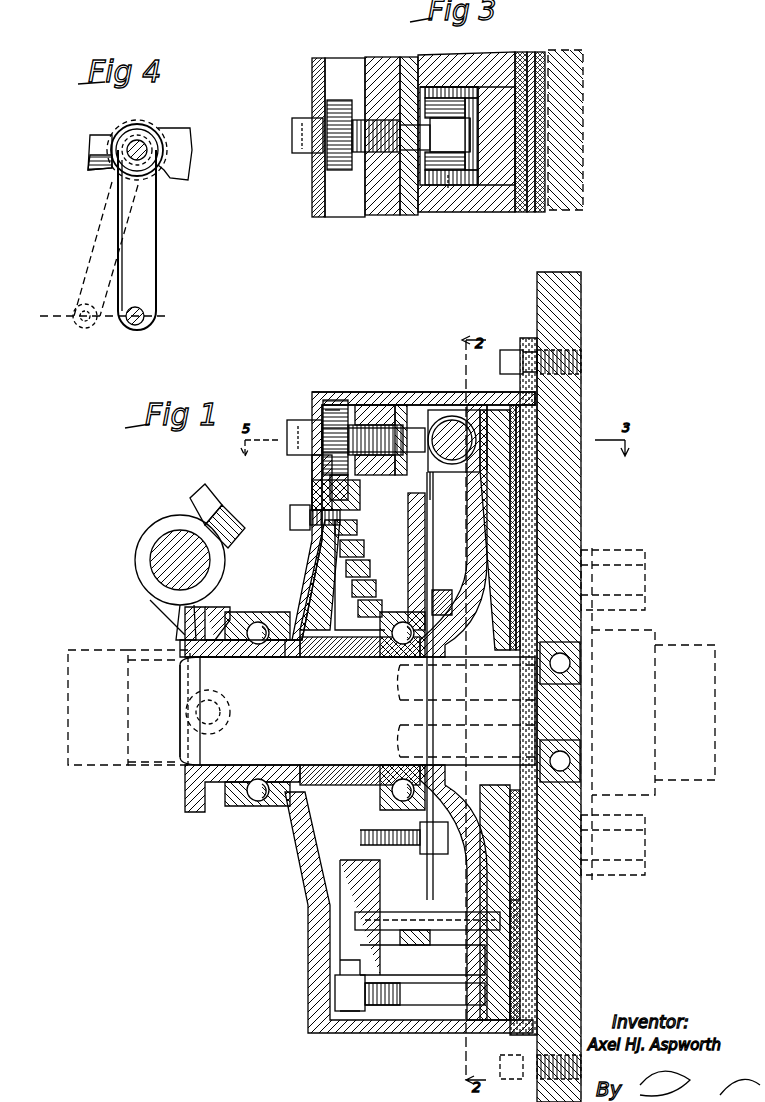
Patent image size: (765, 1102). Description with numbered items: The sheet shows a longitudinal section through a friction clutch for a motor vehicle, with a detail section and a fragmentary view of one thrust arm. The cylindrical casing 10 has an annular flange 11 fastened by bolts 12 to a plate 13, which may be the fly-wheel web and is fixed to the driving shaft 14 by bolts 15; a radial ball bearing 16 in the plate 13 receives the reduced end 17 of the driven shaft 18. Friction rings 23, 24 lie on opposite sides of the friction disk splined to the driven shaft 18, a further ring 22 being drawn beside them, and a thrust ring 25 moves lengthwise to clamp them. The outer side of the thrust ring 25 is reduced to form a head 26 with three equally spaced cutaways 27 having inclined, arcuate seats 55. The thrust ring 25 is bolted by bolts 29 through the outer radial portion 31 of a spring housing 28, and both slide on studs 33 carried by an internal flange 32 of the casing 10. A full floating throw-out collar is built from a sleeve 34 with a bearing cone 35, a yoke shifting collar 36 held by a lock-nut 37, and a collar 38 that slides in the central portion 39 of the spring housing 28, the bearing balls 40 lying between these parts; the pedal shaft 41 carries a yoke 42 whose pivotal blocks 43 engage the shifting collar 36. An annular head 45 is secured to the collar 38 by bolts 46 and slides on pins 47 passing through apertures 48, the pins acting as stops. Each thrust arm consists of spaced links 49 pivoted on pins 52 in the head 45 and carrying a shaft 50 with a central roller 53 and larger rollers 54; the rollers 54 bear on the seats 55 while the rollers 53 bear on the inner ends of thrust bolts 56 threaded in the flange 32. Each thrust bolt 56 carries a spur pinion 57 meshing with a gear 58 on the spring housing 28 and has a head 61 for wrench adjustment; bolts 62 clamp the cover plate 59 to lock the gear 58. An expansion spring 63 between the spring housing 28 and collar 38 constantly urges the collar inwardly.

In FIG. 1, the casing 10 is at (335, 408).
In FIG. 1, the annular flange 11 is at (527, 340).
In FIG. 1, the bolts 12 is at (581, 362).
In FIG. 3, the plate 13 is at (583, 200).
In FIG. 1, the plate 13 is at (581, 298).
In FIG. 1, the driving shaft 14 is at (700, 645).
In FIG. 1, the bolts 15 is at (645, 570).
In FIG. 1, the radial ball bearing 16 is at (570, 665).
In FIG. 1, the reduced end 17 is at (580, 715).
In FIG. 1, the driven shaft 18 is at (102, 748).
In FIG. 3, the ring 22 is at (521, 52).
In FIG. 1, the ring 22 is at (520, 470).
In FIG. 3, the friction ring 23 is at (531, 165).
In FIG. 1, the friction ring 23 is at (513, 445).
In FIG. 3, the friction ring 24 is at (540, 180).
In FIG. 1, the friction ring 24 is at (518, 462).
In FIG. 3, the thrust ring 25 is at (500, 200).
In FIG. 1, the thrust ring 25 is at (500, 430).
In FIG. 3, the annular extension or head 26 is at (430, 212).
In FIG. 3, the cutaways or slots 27 is at (476, 87).
In FIG. 1, the cutaways or slots 27 is at (467, 480).
In FIG. 1, the spring housing 28 is at (325, 540).
In FIG. 1, the bolts 29 is at (600, 795).
In FIG. 3, the outer radial portion 31 is at (410, 57).
In FIG. 1, the outer radial portion 31 is at (401, 405).
In FIG. 3, the internal flange 32 is at (375, 57).
In FIG. 1, the internal flange 32 is at (378, 405).
In FIG. 1, the studs 33 is at (410, 985).
In FIG. 1, the sleeve 34 is at (300, 652).
In FIG. 1, the cone 35 is at (400, 655).
In FIG. 1, the yoke shifting collar 36 is at (185, 622).
In FIG. 1, the lock-nut 37 is at (185, 790).
In FIG. 1, the collar 38 is at (350, 657).
In FIG. 1, the central portion 39 is at (335, 500).
In FIG. 1, the ball bearing 40 is at (200, 637).
In FIG. 1, the pedal shaft 41 is at (180, 548).
In FIG. 1, the yoke 42 is at (150, 600).
In FIG. 1, the pivotal blocks 43 is at (188, 738).
In FIG. 1, the annular head 45 is at (408, 548).
In FIG. 1, the bolts 46 is at (445, 850).
In FIG. 1, the pins 47 is at (400, 912).
In FIG. 1, the apertures 48 is at (420, 935).
In FIG. 4, the links 49 is at (145, 268).
In FIG. 3, the links 49 is at (455, 225).
In FIG. 1, the links 49 is at (442, 686).
In FIG. 3, the shaft 50 is at (445, 190).
In FIG. 1, the shaft 50 is at (434, 500).
In FIG. 4, the pins 52 is at (132, 325).
In FIG. 1, the pins 52 is at (452, 605).
In FIG. 4, the central roller 53 is at (122, 135).
In FIG. 3, the central roller 53 is at (450, 135).
In FIG. 1, the central roller 53 is at (450, 420).
In FIG. 4, the rollers 54 is at (143, 124).
In FIG. 3, the rollers 54 is at (445, 134).
In FIG. 1, the rollers 54 is at (470, 412).
In FIG. 4, the seats 55 is at (175, 128).
In FIG. 3, the seats 55 is at (478, 135).
In FIG. 1, the seats 55 is at (490, 450).
In FIG. 4, the thrust bolts 56 is at (95, 140).
In FIG. 3, the thrust bolts 56 is at (362, 158).
In FIG. 1, the thrust bolts 56 is at (360, 425).
In FIG. 3, the spur pinion 57 is at (338, 100).
In FIG. 1, the spur pinion 57 is at (330, 400).
In FIG. 1, the gear 58 is at (312, 490).
In FIG. 3, the cover plate 59 is at (315, 180).
In FIG. 1, the cover plate 59 is at (312, 468).
In FIG. 3, the head 61 is at (295, 120).
In FIG. 1, the head 61 is at (295, 420).
In FIG. 1, the bolts 62 is at (290, 517).
In FIG. 1, the expansion spring 63 is at (360, 575).